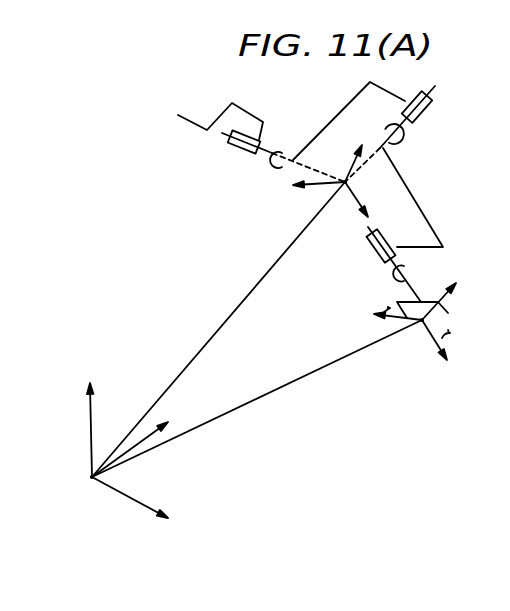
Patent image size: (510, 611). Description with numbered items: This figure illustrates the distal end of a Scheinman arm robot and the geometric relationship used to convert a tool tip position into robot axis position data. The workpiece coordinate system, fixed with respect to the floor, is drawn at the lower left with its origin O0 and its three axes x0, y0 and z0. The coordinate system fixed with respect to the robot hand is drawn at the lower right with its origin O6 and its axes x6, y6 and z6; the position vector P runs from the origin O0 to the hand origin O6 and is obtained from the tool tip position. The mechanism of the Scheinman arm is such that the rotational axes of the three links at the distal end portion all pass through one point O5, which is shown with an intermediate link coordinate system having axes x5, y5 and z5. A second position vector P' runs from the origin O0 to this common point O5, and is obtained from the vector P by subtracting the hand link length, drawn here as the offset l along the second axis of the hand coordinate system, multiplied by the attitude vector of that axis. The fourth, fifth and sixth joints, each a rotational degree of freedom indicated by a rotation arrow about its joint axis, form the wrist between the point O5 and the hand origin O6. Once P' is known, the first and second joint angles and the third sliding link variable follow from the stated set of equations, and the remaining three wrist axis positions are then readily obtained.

The origin of workpiece coordinate system O0 is at (79, 483).
The x axis of workpiece coordinate system x0 is at (131, 513).
The y axis of workpiece coordinate system y0 is at (141, 440).
The z axis of workpiece coordinate system z0 is at (90, 419).
The position vector of point O5 P' is at (218, 329).
The position vector of hand origin P is at (257, 398).
The intersection point of distal rotational axes O5 is at (340, 203).
The x axis of fifth link coordinate system x5 is at (348, 157).
The y axis of fifth link coordinate system y5 is at (316, 198).
The z axis of fifth link coordinate system z5 is at (372, 202).
The origin of hand coordinate system O6 is at (413, 335).
The x axis of hand coordinate system x6 is at (455, 297).
The y axis of hand coordinate system y6 is at (382, 329).
The z axis of hand coordinate system z6 is at (448, 352).
The offset length of hand l is at (417, 309).